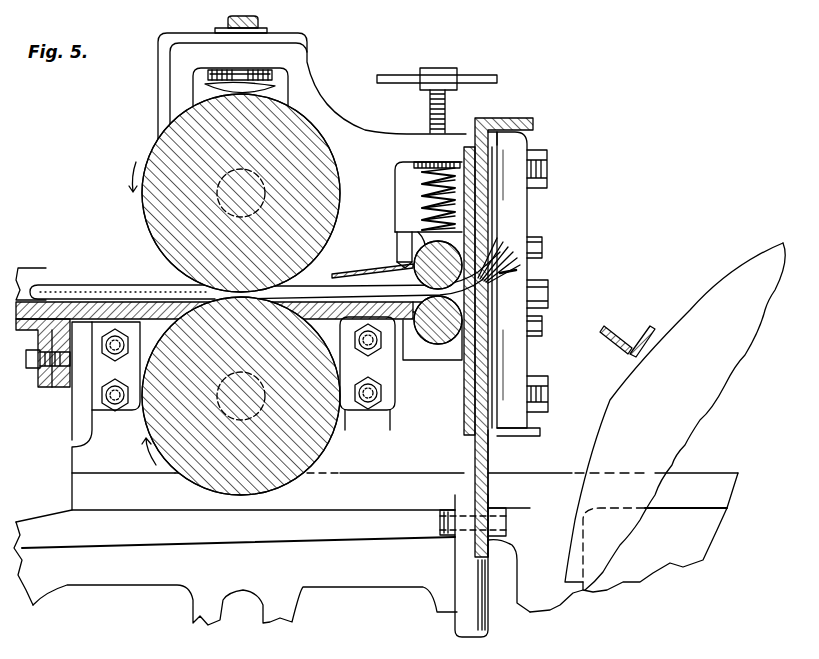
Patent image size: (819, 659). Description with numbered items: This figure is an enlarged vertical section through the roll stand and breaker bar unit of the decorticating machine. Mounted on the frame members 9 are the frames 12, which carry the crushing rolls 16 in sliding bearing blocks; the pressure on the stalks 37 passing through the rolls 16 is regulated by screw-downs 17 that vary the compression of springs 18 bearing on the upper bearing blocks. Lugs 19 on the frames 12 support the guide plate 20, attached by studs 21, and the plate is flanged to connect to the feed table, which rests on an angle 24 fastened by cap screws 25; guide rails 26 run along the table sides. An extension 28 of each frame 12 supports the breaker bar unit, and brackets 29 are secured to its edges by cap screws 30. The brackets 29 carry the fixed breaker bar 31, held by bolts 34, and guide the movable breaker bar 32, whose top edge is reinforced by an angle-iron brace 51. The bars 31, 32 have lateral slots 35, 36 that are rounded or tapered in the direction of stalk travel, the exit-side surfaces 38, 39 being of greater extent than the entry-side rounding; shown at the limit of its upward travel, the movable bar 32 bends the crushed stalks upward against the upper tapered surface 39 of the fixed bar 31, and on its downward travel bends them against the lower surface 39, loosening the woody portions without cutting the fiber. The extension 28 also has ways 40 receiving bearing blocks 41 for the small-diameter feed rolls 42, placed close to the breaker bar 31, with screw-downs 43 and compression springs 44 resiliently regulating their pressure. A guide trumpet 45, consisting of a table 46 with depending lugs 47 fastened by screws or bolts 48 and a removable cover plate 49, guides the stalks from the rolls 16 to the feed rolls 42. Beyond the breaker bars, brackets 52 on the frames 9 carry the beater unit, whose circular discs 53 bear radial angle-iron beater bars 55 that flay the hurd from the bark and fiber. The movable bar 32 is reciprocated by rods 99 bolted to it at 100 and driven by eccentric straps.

The frame members 9 is at (145, 578).
The frames 12 is at (163, 84).
The rolls 16 is at (156, 142).
The screw-downs 17 is at (242, 29).
The springs 18 is at (268, 94).
The lugs 19 is at (98, 384).
The guide plate 20 is at (75, 296).
The studs 21 is at (104, 400).
The angle 24 is at (52, 387).
The cap screws 25 is at (35, 369).
The guide rails 26 is at (30, 270).
The extension 28 is at (462, 138).
The brackets 29 is at (518, 378).
The cap screws 30 is at (548, 160).
The fixed breaker bar 31 is at (468, 414).
The movable breaker bar 32 is at (475, 452).
The bolts 34 is at (546, 173).
The slot 35 is at (550, 295).
The slot 36 is at (497, 250).
The stalks 37 is at (130, 290).
The tapered surface 38 is at (500, 281).
The tapered surface 39 is at (544, 326).
The ways 40 is at (408, 262).
The bearing blocks 41 is at (410, 240).
The feed rolls 42 is at (452, 252).
The screw-downs 43 is at (430, 110).
The compression springs 44 is at (424, 186).
The guide trumpet 45 is at (362, 259).
The table 46 is at (348, 314).
The depending lugs 47 is at (382, 410).
The screws or bolts 48 is at (362, 350).
The cover plate 49 is at (414, 258).
The angle-iron brace 51 is at (535, 124).
The brackets or extensions 52 is at (722, 482).
The circular discs 53 is at (735, 270).
The beater bars 55 is at (612, 342).
The rods 99 is at (466, 624).
The bolt connection 100 is at (440, 522).